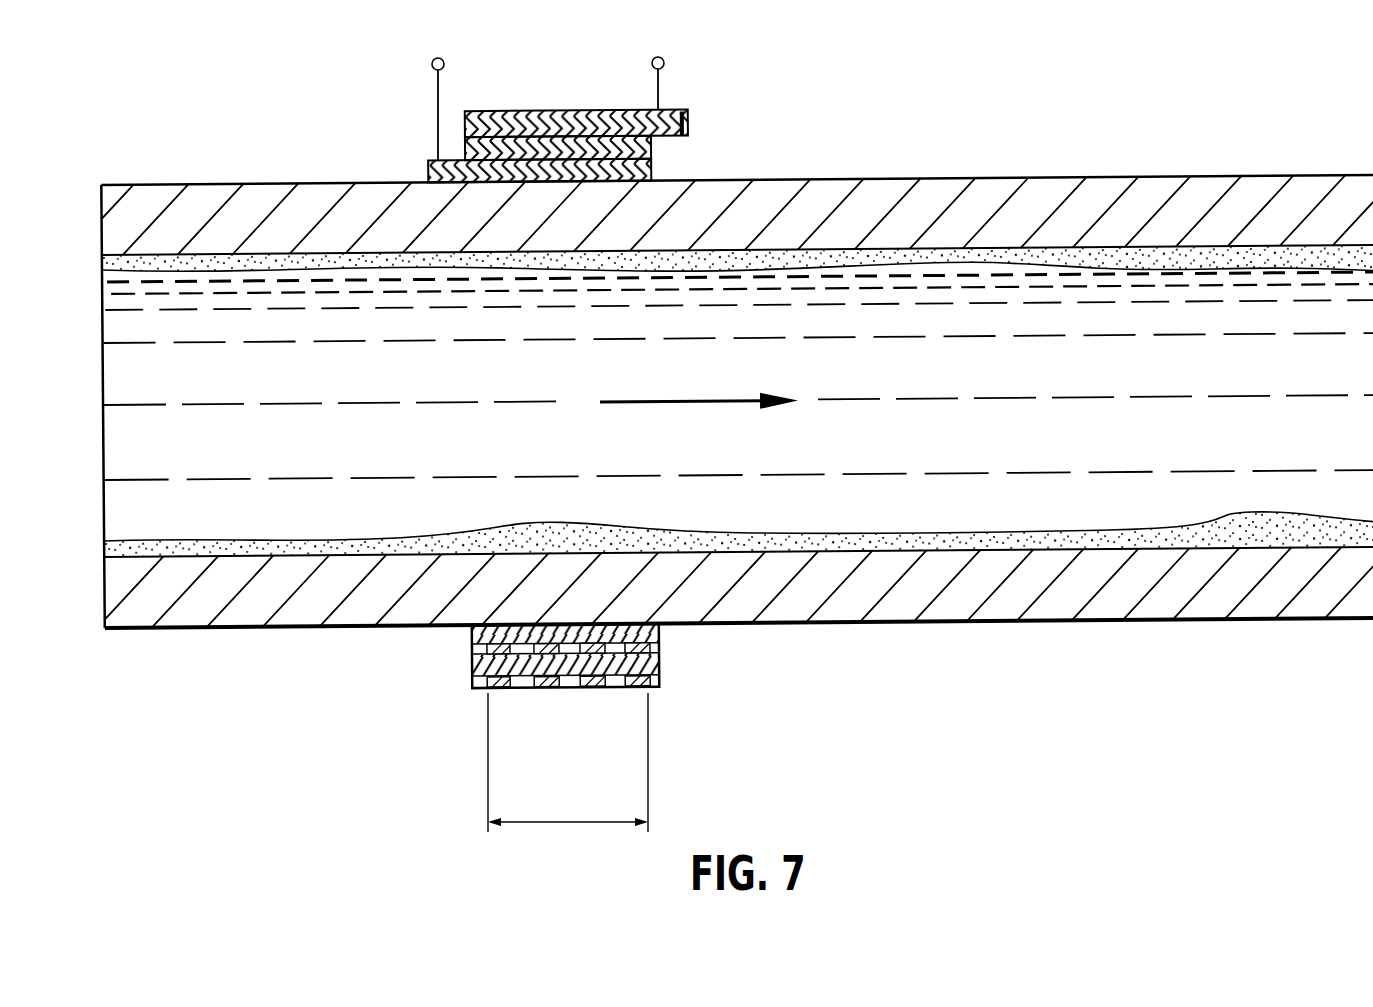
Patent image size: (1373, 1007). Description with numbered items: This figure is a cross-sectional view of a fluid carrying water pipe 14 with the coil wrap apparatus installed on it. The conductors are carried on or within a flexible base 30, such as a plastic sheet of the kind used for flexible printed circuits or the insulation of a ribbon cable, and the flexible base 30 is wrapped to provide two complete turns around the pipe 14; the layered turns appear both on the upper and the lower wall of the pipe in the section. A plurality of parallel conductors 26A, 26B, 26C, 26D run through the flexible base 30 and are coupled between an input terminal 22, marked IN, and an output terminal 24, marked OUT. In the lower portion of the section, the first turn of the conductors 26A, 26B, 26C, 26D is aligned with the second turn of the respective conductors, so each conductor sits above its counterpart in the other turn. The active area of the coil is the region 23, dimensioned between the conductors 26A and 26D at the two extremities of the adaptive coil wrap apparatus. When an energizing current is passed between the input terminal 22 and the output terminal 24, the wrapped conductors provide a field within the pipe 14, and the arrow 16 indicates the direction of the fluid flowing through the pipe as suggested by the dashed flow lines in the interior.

The water pipe 14 is at (1152, 626).
The fluid flow 16 is at (687, 400).
The input terminal 22 is at (432, 63).
The region 23 is at (565, 744).
The output terminal 24 is at (665, 60).
The parallel conductor 26A is at (497, 690).
The parallel conductor 26B is at (545, 690).
The parallel conductor 26C is at (598, 690).
The parallel conductor 26D is at (640, 692).
The flexible base 30 is at (473, 114).